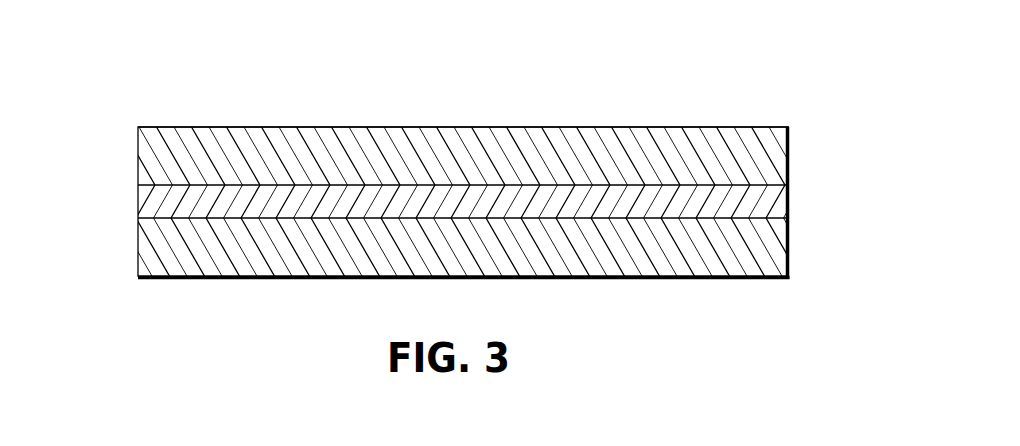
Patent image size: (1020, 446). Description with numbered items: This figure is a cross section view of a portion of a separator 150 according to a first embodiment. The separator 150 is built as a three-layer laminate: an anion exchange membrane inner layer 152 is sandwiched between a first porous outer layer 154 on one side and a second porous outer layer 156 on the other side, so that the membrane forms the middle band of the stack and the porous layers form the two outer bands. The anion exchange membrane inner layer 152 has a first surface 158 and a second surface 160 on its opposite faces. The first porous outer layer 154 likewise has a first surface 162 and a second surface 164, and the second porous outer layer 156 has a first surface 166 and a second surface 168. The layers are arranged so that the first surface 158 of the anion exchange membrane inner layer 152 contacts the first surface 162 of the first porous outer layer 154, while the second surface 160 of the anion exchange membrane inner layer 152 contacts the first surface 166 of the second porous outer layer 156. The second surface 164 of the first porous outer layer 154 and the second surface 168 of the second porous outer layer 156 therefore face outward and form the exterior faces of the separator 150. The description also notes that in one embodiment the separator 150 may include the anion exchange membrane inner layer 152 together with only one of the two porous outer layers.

The separator 150 is at (258, 330).
The anion exchange membrane inner layer 152 is at (138, 202).
The first porous outer layer 154 is at (138, 156).
The second porous outer layer 156 is at (138, 247).
The first surface of anion exchange membrane inner layer 158 is at (789, 185).
The second surface of anion exchange membrane inner layer 160 is at (789, 218).
The first surface of first porous outer layer 162 is at (138, 185).
The second surface of first porous outer layer 164 is at (787, 127).
The first surface of second porous outer layer 166 is at (138, 218).
The second surface of second porous outer layer 168 is at (790, 277).